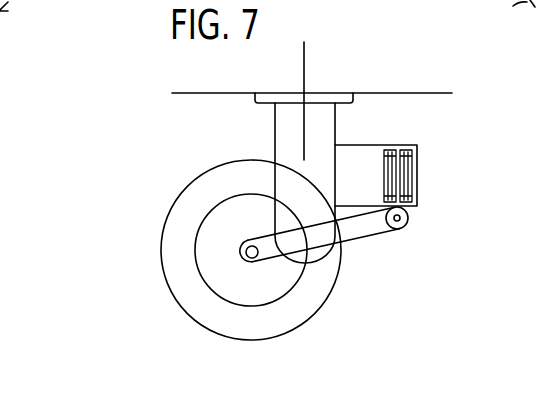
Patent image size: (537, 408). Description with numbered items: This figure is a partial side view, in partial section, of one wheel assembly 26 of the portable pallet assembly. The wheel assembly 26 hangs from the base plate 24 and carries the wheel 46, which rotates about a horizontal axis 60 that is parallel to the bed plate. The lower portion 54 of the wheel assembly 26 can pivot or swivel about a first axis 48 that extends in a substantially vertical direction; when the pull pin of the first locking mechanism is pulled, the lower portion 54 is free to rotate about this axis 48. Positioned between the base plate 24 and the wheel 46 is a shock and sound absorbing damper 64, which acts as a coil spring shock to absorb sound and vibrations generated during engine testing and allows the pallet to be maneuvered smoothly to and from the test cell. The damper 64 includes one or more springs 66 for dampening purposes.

The base plate 24 is at (370, 93).
The wheel assembly 26 is at (447, 108).
The wheel 46 is at (217, 188).
The first axis 48 is at (307, 50).
The lower portion 54 is at (293, 140).
The horizontal axis 60 is at (245, 250).
The damper 64 is at (428, 144).
The springs 66 is at (409, 193).